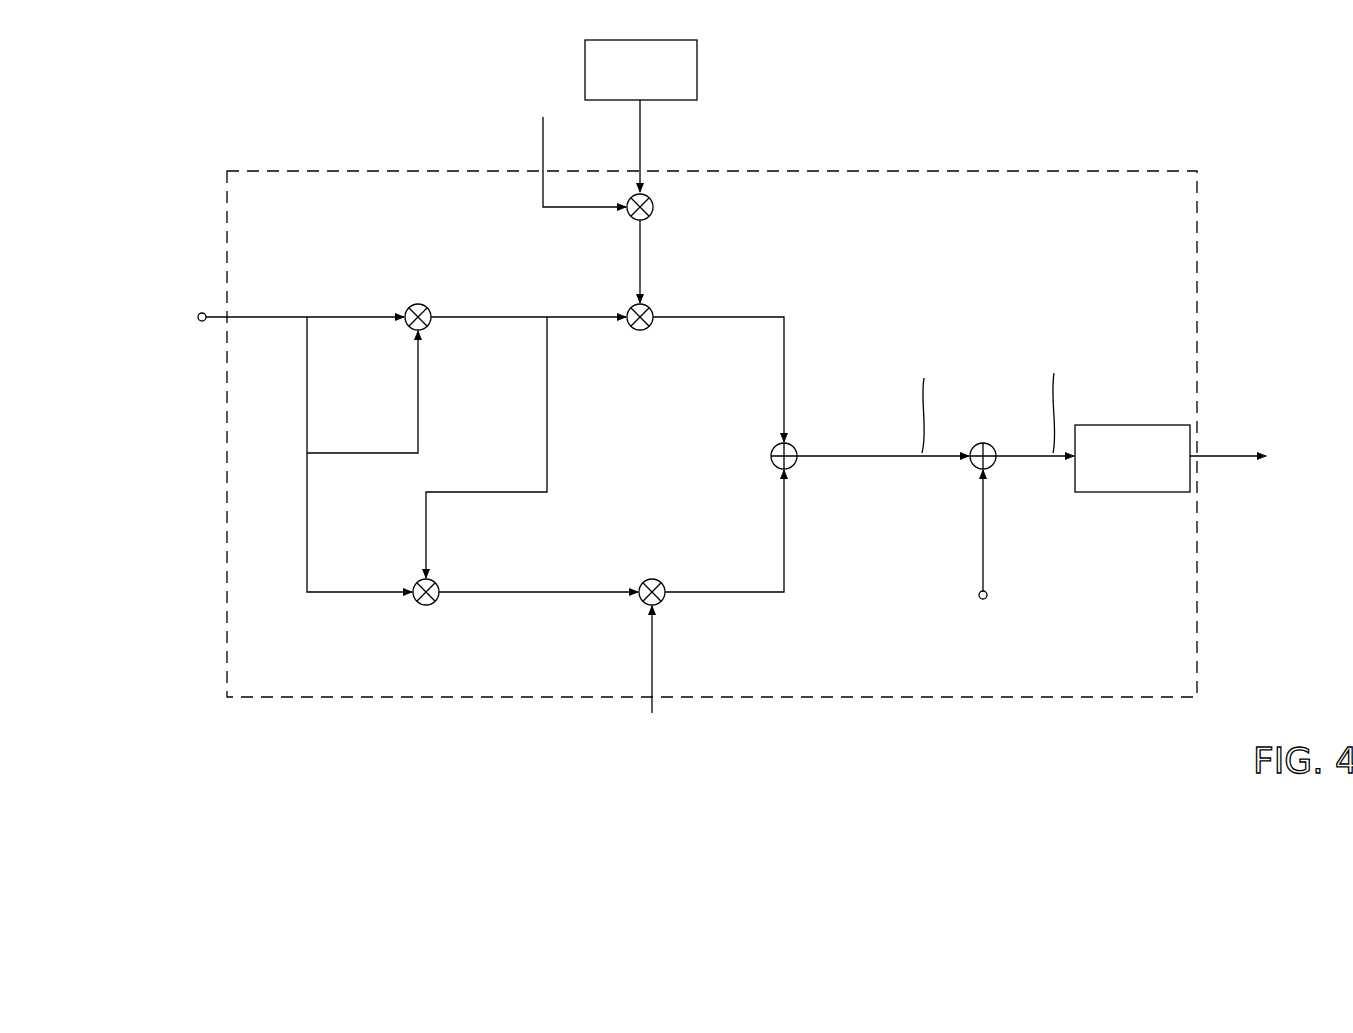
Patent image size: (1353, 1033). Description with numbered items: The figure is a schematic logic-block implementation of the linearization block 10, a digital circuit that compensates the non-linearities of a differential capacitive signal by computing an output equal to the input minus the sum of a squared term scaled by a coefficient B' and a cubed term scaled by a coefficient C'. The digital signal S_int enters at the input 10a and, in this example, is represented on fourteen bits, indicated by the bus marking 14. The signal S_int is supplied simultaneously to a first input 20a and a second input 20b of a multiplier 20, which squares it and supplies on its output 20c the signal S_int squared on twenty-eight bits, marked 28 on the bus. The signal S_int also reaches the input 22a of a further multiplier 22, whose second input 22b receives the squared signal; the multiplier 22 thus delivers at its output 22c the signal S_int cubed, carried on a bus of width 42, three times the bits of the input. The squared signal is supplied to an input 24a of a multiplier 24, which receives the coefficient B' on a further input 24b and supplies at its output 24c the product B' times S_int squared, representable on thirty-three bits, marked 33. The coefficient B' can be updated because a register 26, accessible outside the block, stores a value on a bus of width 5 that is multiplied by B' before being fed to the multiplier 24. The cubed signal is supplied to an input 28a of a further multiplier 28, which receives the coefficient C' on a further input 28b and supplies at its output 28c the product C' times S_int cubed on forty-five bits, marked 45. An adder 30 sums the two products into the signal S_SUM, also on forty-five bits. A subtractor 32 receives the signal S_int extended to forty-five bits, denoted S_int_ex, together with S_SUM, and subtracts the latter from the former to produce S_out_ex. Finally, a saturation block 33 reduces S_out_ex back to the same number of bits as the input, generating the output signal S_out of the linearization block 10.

The register bit count 5 is at (650, 130).
The linearization block 10 is at (370, 166).
The input 10a is at (200, 311).
The S_int bit count 14 is at (252, 330).
The multiplier 20 is at (418, 304).
The first input of multiplier 20a is at (406, 308).
The second input of multiplier 20b is at (428, 326).
The output of multiplier 20c is at (431, 310).
The further multiplier 22 is at (426, 606).
The input of further multiplier 22a is at (416, 603).
The second input of further multiplier 22b is at (437, 581).
The output of further multiplier 22c is at (440, 599).
The multiplier 24 is at (647, 329).
The input of multiplier 24a is at (630, 327).
The further input of multiplier 24b is at (650, 306).
The output of multiplier 24c is at (651, 326).
The register 26 is at (683, 45).
The further multiplier 28 is at (517, 330).
The input of further multiplier 28a is at (642, 603).
The further input of further multiplier 28b is at (662, 603).
The output of further multiplier 28c is at (664, 583).
The adder 30 is at (771, 454).
The subtractor 32 is at (984, 443).
The saturation block 33 is at (717, 330).
The S_int³ bit count 42 is at (517, 600).
The forty-five-bit representation 45 is at (858, 470).